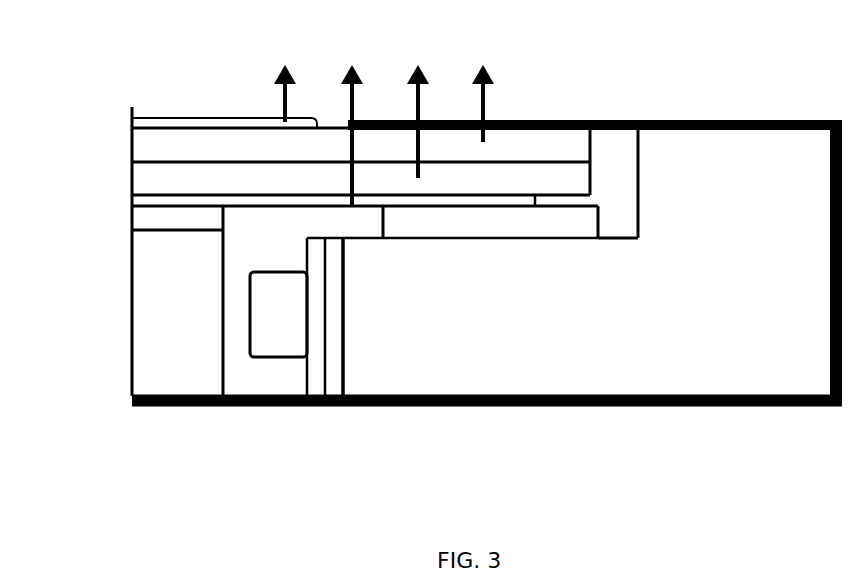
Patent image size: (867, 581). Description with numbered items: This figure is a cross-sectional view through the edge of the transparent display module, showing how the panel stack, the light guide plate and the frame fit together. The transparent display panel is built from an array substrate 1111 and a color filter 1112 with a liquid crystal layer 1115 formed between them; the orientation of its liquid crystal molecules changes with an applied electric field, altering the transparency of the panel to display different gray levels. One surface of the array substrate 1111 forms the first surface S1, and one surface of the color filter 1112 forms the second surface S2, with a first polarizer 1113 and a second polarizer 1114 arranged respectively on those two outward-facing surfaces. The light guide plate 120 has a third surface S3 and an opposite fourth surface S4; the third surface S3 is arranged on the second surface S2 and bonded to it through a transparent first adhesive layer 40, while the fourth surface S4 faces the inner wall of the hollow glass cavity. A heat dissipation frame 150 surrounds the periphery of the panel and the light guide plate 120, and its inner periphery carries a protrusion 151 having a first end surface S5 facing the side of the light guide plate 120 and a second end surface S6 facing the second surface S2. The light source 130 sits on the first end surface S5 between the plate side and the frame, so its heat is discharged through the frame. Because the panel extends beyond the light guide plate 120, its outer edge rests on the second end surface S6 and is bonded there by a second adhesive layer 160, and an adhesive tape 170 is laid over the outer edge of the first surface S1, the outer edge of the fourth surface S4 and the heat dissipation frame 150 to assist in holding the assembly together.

The first surface S1 is at (168, 127).
The second surface S2 is at (165, 195).
The third surface S3 is at (173, 232).
The fourth surface S4 is at (153, 393).
The first end surface S5 is at (346, 347).
The second end surface S6 is at (587, 238).
The adhesive layer 40 is at (152, 212).
The light guide plate 120 is at (195, 382).
The light source 130 is at (318, 378).
The heat dissipation frame 150 is at (727, 380).
The protrusion 151 is at (460, 360).
The second adhesive layer 160 is at (592, 202).
The adhesive tape 170 is at (690, 120).
The array substrate 1111 is at (504, 90).
The color filter 1112 is at (424, 108).
The first polarizer 1113 is at (269, 80).
The second polarizer 1114 is at (349, 123).
The liquid crystal layer 1115 is at (528, 162).